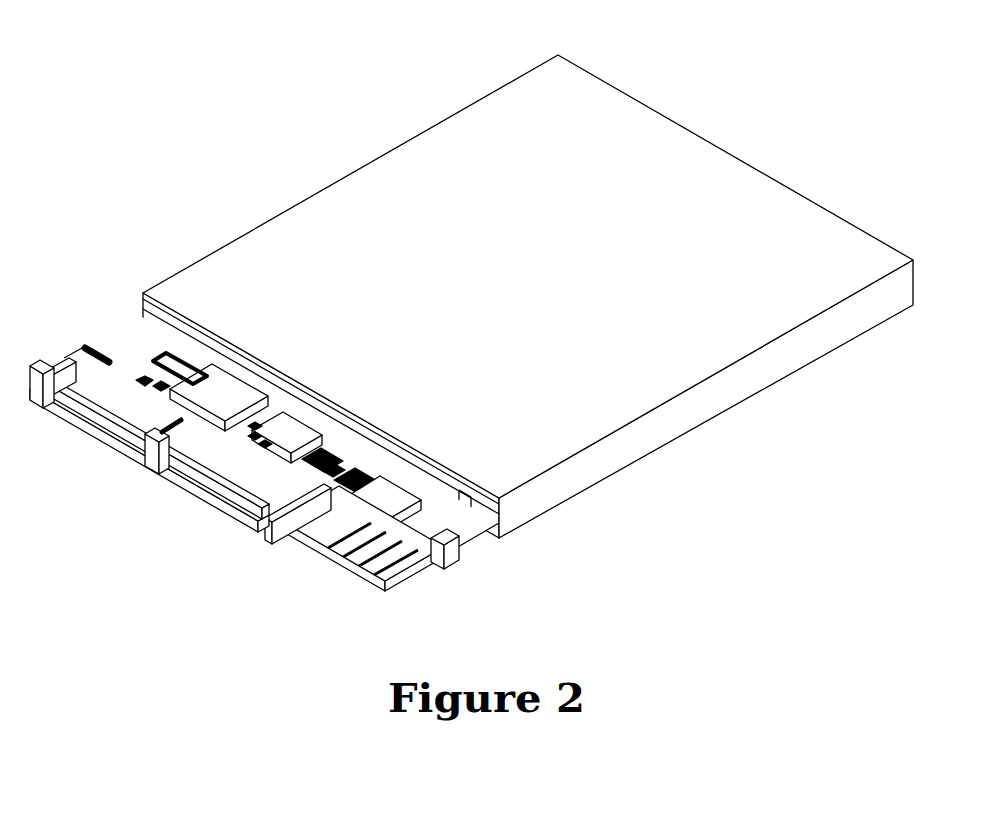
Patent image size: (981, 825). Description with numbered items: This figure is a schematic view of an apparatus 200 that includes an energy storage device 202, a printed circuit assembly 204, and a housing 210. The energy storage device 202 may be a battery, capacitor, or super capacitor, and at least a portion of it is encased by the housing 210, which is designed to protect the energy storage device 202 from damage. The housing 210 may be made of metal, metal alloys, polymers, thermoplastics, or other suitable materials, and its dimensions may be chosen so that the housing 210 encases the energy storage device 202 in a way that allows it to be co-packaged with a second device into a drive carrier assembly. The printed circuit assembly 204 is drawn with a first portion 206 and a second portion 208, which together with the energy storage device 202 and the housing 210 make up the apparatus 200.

The apparatus 200 is at (471, 337).
The energy storage device 202 is at (264, 428).
The printed circuit assembly 204 is at (417, 570).
The first portion 206 is at (167, 332).
The second portion 208 is at (241, 508).
The housing 210 is at (398, 181).